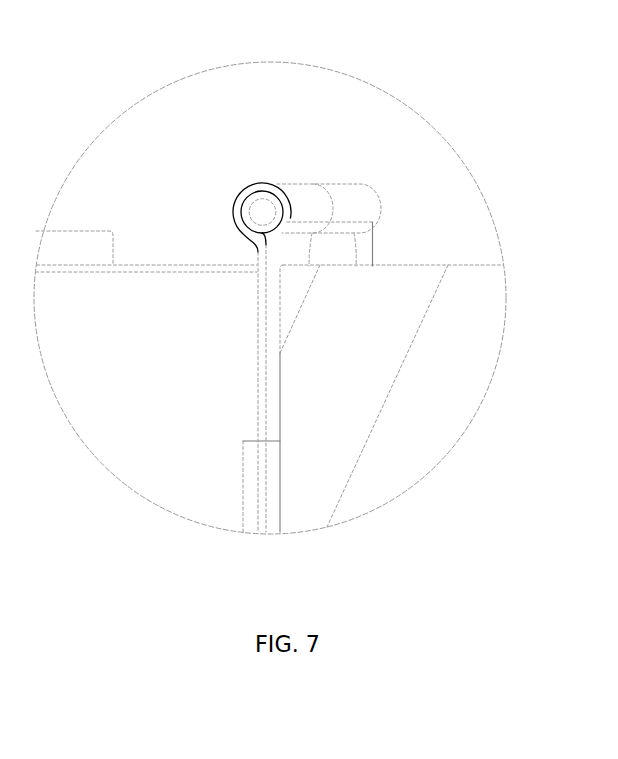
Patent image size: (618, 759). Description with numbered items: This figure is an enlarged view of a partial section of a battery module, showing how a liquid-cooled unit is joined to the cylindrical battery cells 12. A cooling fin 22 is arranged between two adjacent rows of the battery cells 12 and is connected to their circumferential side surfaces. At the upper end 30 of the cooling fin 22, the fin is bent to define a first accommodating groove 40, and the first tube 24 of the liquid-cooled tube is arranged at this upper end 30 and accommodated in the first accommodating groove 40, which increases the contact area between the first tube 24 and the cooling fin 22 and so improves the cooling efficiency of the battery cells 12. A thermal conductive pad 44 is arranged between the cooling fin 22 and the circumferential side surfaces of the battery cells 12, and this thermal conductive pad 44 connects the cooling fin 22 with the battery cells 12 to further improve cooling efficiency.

The battery cell 12 is at (452, 429).
The cooling fin 22 is at (267, 508).
The first tube 24 is at (287, 190).
The upper end 30 is at (360, 200).
The first accommodating groove 40 is at (236, 194).
The thermal conductive pad 44 is at (243, 449).